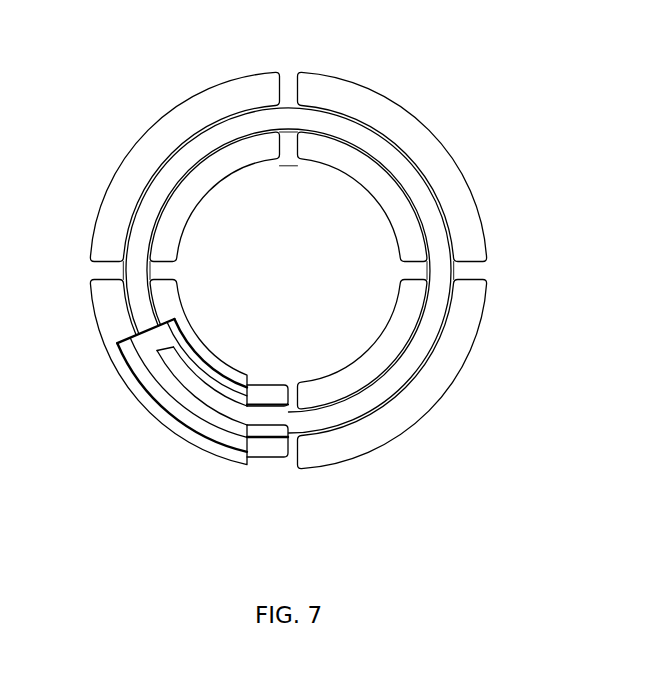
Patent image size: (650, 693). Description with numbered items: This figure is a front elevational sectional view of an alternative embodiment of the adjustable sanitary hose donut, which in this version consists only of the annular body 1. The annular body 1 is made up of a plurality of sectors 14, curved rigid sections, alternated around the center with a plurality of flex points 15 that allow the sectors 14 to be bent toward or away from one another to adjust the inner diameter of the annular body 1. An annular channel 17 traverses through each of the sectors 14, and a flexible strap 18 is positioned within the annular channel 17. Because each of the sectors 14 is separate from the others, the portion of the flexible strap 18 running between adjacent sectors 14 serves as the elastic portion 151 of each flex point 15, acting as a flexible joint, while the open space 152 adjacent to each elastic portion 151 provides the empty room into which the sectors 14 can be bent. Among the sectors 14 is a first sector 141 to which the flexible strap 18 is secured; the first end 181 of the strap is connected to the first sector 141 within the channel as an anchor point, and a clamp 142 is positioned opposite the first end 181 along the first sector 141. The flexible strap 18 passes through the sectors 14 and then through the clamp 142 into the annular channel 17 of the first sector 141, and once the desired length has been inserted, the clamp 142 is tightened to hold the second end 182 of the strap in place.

The annular body 1 is at (470, 70).
The plurality of sectors 14 is at (149, 147).
The plurality of flex points 15 is at (290, 58).
The annular channel 17 is at (216, 163).
The flexible strap 18 is at (346, 121).
The first sector 141 is at (147, 402).
The clamp 142 is at (263, 450).
The elastic portion 151 is at (286, 120).
The open space 152 is at (290, 160).
The first end 181 is at (148, 316).
The second end 182 is at (152, 372).